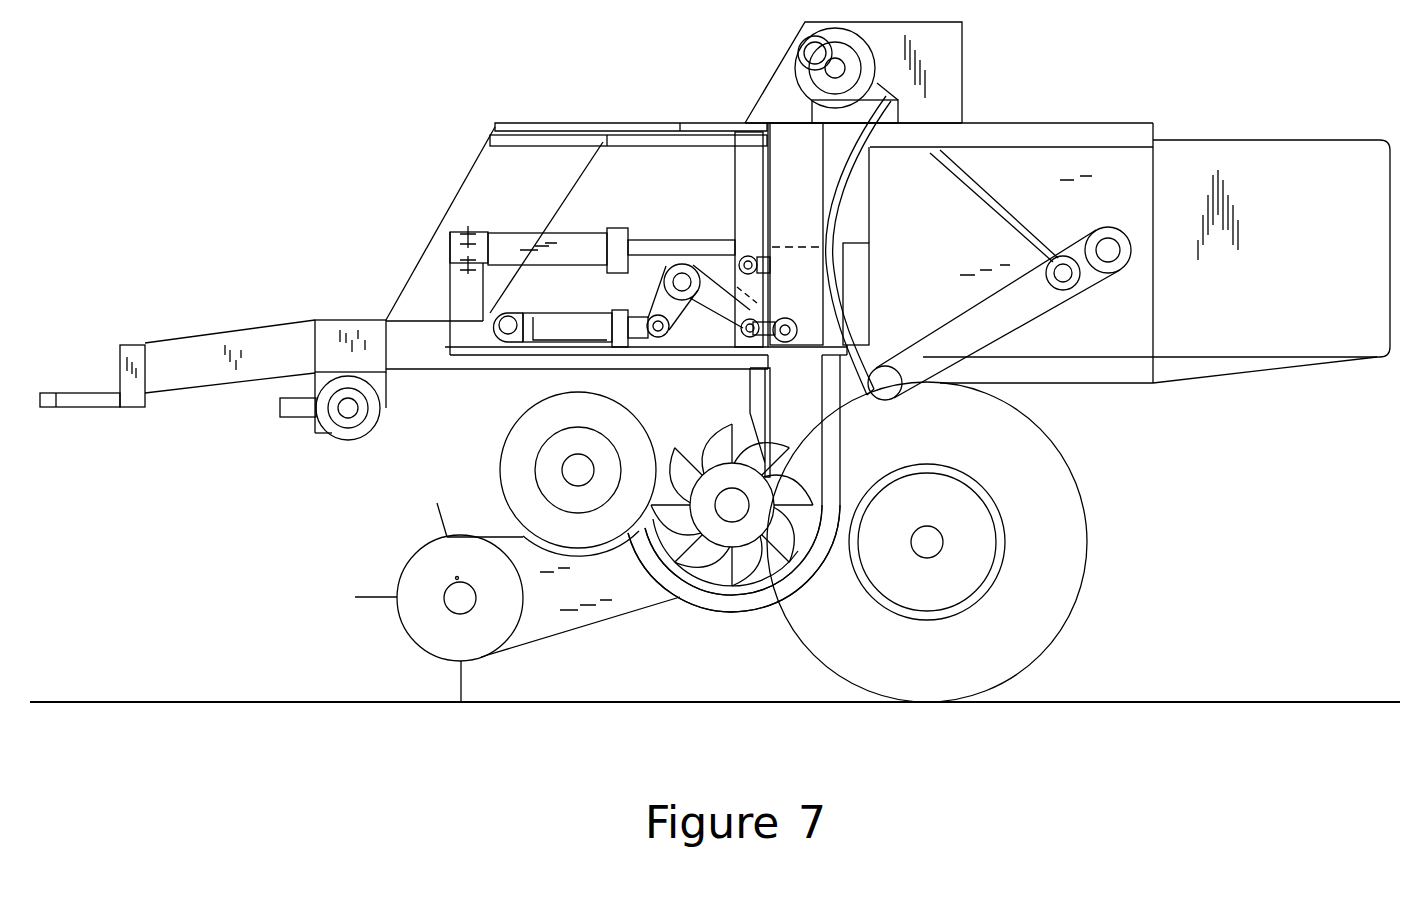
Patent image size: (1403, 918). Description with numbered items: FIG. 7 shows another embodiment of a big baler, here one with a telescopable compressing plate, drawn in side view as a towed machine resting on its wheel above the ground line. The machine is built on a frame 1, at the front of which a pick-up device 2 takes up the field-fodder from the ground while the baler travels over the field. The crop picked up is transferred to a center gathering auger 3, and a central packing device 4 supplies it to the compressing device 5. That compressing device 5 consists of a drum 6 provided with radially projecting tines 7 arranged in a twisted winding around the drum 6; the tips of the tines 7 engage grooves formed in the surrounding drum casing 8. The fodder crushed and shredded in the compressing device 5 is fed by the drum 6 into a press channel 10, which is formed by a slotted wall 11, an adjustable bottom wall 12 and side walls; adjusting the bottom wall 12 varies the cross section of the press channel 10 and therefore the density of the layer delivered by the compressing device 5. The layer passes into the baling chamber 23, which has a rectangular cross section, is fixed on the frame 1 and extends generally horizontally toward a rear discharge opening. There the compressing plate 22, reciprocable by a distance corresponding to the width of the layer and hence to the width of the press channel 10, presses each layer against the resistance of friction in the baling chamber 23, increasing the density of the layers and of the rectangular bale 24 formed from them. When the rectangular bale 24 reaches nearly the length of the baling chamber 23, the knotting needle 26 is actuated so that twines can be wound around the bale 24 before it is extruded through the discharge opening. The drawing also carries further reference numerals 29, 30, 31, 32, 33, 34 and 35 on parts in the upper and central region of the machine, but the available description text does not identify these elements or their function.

The frame 1 is at (330, 325).
The pick-up device 2 is at (415, 570).
The center gathering auger 3 is at (513, 456).
The central packing device 4 is at (707, 523).
The compressing device 5 is at (703, 533).
The drum 6 is at (715, 537).
The tines 7 is at (718, 563).
The drum casing 8 is at (747, 588).
The press channel 10 is at (786, 398).
The slotted wall 11 is at (793, 490).
The adjustable bottom wall 12 is at (833, 440).
The compressing plate 22 is at (742, 188).
The baling chamber 23 is at (1093, 165).
The rectangular bale 24 is at (1240, 155).
The knotting needle 26 is at (845, 312).
The support bracket 29 is at (853, 263).
The drive housing 30 is at (792, 148).
The pivot pin 31 is at (748, 334).
The upper hydraulic cylinder 32 is at (513, 243).
The lower hydraulic cylinder 33 is at (543, 323).
The top rail 34 is at (503, 135).
The link arm 35 is at (707, 303).